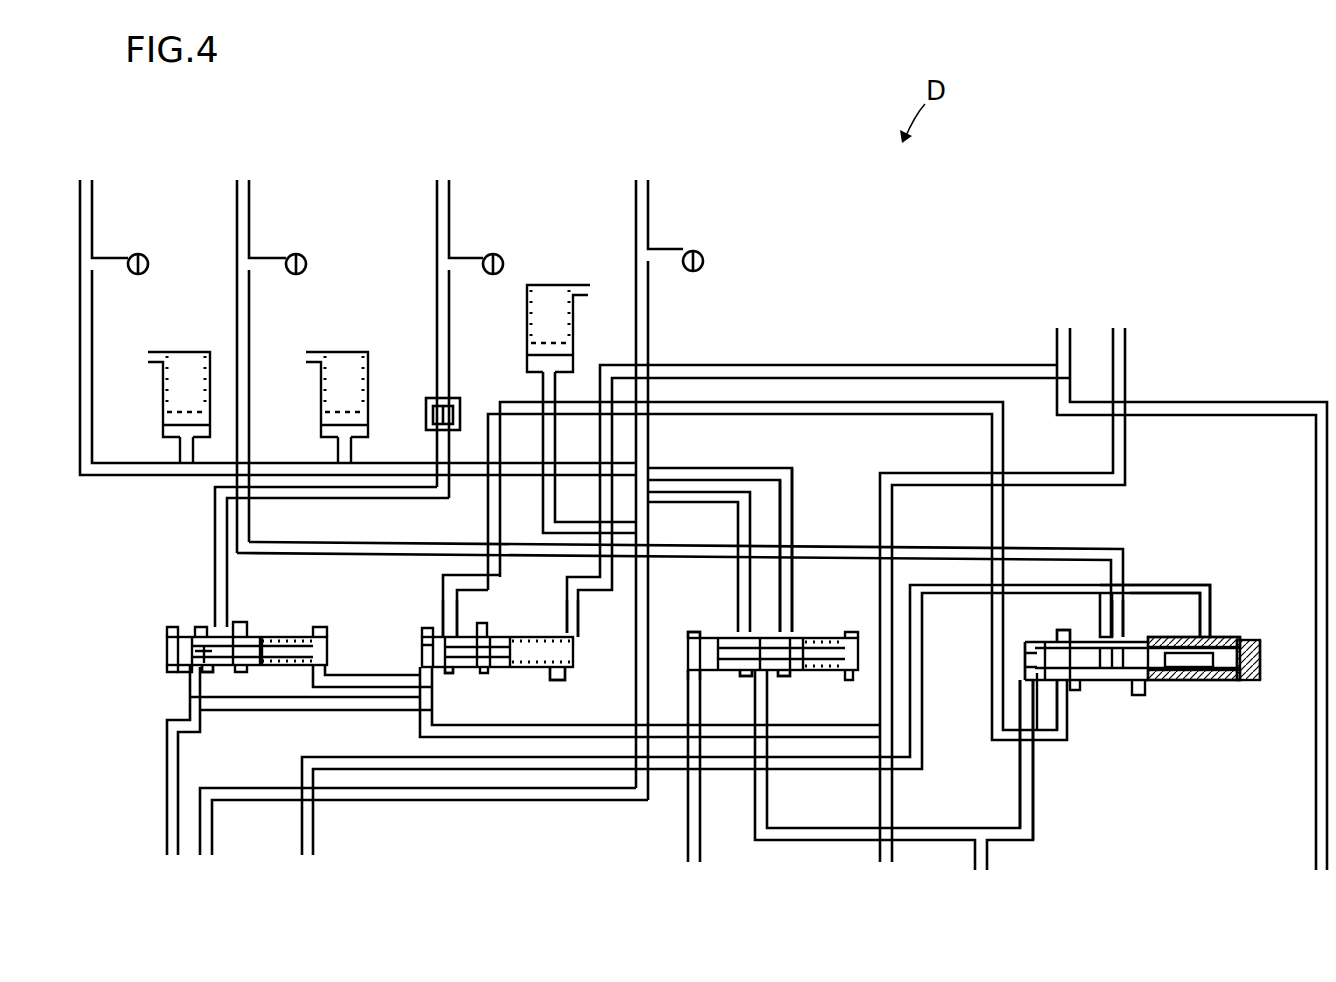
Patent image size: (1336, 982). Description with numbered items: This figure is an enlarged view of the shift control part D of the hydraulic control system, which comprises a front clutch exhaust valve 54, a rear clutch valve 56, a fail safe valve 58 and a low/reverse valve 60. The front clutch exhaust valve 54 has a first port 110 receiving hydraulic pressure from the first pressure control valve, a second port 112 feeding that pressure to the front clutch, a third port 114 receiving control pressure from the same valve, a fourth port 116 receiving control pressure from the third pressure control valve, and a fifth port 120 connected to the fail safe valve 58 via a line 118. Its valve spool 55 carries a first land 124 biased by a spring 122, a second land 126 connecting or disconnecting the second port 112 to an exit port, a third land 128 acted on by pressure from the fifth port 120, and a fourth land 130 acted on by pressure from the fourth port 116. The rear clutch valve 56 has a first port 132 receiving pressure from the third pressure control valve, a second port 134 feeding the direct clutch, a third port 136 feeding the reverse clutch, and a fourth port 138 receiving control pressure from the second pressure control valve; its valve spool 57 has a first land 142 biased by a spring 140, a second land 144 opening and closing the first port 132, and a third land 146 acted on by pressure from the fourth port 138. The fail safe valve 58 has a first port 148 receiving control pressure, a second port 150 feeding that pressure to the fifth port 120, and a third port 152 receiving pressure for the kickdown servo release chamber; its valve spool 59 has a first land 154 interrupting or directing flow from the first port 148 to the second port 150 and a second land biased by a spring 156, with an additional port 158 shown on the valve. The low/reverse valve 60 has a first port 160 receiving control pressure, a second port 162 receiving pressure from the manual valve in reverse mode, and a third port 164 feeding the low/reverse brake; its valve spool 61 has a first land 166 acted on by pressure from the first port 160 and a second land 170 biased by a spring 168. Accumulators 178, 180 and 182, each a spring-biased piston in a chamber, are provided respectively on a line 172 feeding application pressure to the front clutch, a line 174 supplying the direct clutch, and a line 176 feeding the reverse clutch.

The front clutch exhaust valve 54 is at (1141, 745).
The valve spool 55 is at (1014, 657).
The rear clutch valve 56 is at (830, 622).
The valve spool 57 is at (700, 655).
The fail safe valve 58 is at (406, 650).
The valve spool 59 is at (500, 638).
The low/reverse valve 60 is at (150, 647).
The valve spool 61 is at (219, 673).
The first port 110 is at (1097, 633).
The second port 112 is at (1118, 633).
The third port 114 is at (1205, 633).
The fourth port 116 is at (1025, 687).
The line 118 is at (1003, 440).
The fifth port 120 is at (1073, 692).
The spring 122 is at (1225, 684).
The first land 124 is at (1160, 682).
The second land 126 is at (1130, 641).
The third land 128 is at (1080, 681).
The fourth land 130 is at (1037, 648).
The first port 132 is at (760, 685).
The second port 134 is at (737, 632).
The third port 136 is at (793, 630).
The fourth port 138 is at (690, 672).
The spring 140 is at (860, 682).
The first land 142 is at (793, 676).
The second land 144 is at (745, 673).
The third land 146 is at (703, 638).
The first port 148 is at (425, 676).
The second port 150 is at (450, 626).
The third port 152 is at (568, 633).
The first land 154 is at (425, 640).
The spring 156 is at (552, 672).
The port 158 is at (493, 668).
The first port 160 is at (172, 672).
The second port 162 is at (198, 672).
The third port 164 is at (218, 626).
The first land 166 is at (178, 640).
The spring 168 is at (290, 630).
The second land 170 is at (247, 664).
The line 172 is at (939, 550).
The line 174 is at (648, 318).
The line 176 is at (697, 466).
The accumulator 178 is at (345, 350).
The accumulator 180 is at (551, 283).
The accumulator 182 is at (187, 350).